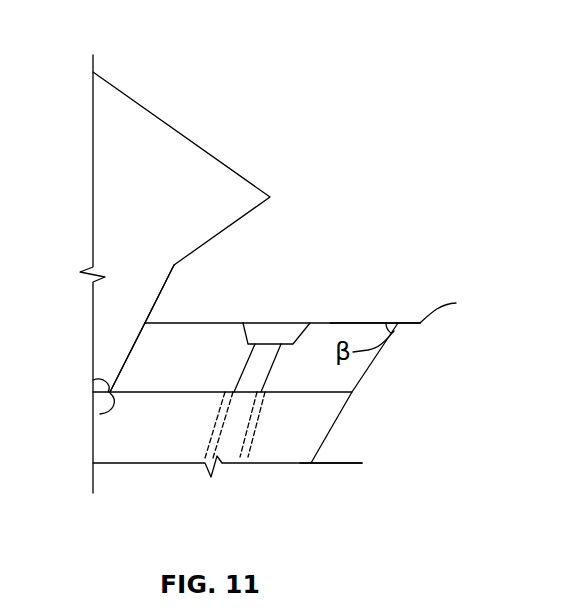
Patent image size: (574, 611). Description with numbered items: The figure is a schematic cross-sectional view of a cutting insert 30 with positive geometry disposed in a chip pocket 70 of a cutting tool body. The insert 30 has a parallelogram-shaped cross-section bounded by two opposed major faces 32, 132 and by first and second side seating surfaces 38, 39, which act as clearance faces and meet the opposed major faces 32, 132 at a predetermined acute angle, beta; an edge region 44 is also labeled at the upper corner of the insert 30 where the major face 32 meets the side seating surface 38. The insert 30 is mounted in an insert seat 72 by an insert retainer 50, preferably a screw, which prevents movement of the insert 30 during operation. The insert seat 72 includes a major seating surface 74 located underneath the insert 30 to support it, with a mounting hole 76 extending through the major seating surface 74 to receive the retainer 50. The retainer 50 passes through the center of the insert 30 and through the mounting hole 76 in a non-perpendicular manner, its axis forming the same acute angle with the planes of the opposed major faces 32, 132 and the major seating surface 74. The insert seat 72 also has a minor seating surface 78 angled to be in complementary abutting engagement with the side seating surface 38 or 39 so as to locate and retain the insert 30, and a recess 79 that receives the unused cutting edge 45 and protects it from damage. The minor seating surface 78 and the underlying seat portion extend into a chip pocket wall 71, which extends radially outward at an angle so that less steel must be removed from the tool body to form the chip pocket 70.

The chip pocket wall 71 is at (112, 175).
The chip pocket 70 is at (255, 241).
The insert 30 is at (345, 321).
The opposed major face 32 is at (372, 323).
The edge 44 is at (454, 308).
The first side seating surface 38 is at (372, 370).
The insert retainer 50 is at (268, 348).
The second side seating surface 39 is at (136, 332).
The minor seating surface 78 is at (120, 362).
The unused cutting edge 45 is at (97, 381).
The recess 79 is at (100, 414).
The insert seat 72 is at (112, 443).
The major seating surface 74 is at (190, 395).
The mounting hole 76 is at (230, 443).
The opposed major face 132 is at (292, 395).